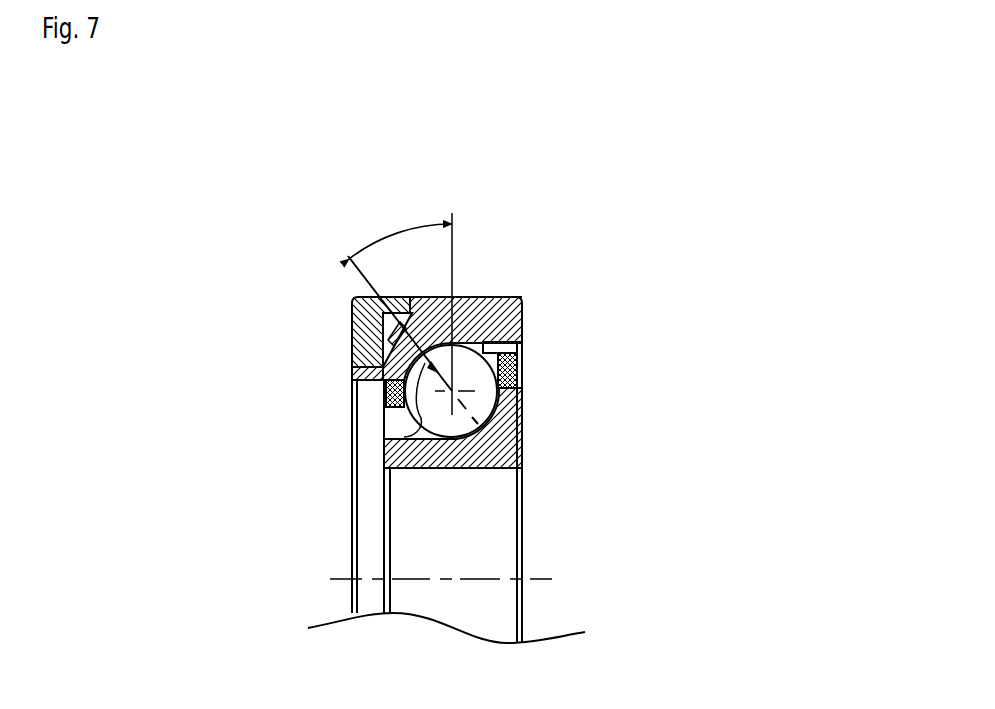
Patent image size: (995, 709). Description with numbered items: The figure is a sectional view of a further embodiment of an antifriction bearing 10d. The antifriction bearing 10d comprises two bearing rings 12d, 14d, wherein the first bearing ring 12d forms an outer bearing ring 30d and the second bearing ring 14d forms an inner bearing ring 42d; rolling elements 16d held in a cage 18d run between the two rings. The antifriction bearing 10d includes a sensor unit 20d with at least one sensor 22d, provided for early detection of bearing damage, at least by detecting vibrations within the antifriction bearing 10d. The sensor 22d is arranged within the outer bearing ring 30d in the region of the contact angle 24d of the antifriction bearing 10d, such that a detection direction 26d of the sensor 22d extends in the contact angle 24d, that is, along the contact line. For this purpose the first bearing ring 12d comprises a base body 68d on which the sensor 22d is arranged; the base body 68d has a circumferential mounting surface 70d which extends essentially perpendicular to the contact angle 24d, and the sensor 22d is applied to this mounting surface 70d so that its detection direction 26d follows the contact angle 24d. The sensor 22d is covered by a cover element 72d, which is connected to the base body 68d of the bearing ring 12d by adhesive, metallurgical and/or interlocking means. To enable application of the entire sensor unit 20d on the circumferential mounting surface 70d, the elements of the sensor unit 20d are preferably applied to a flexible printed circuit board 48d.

The antifriction bearing 10d is at (748, 177).
The first bearing ring 12d is at (526, 338).
The outer bearing ring 30d is at (497, 322).
The second bearing ring 14d is at (542, 434).
The inner bearing ring 42d is at (500, 443).
The rolling element (ball) 16d is at (493, 420).
The cage 18d is at (387, 383).
The sensor unit 20d is at (352, 342).
The sensor 22d is at (354, 316).
The contact angle 24d is at (400, 232).
The detection direction 26d is at (418, 465).
The flexible printed circuit board 48d is at (352, 387).
The base body 68d is at (480, 297).
The mounting surface 70d is at (413, 297).
The cover element 72d is at (385, 330).